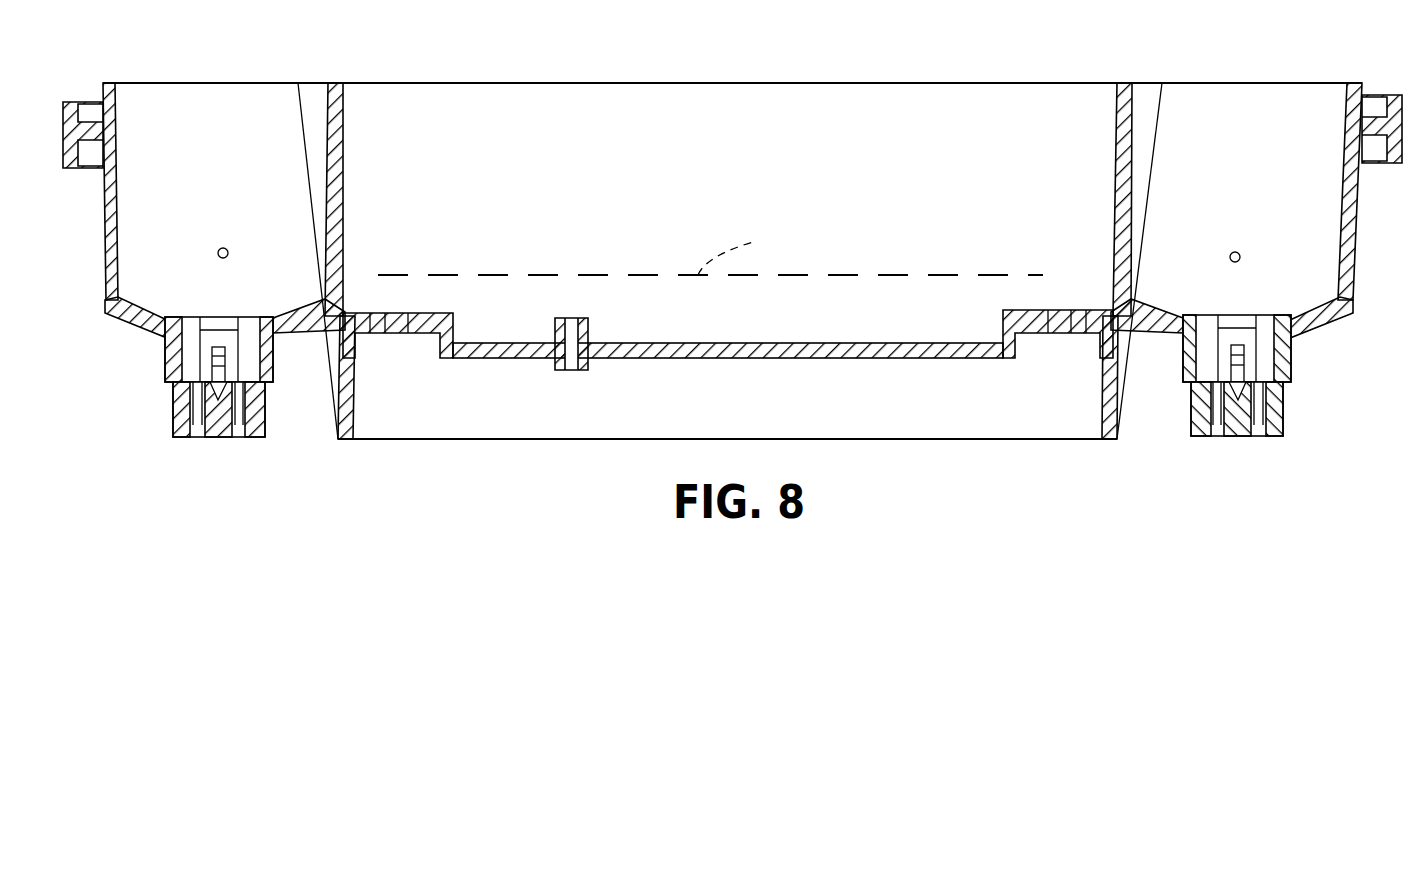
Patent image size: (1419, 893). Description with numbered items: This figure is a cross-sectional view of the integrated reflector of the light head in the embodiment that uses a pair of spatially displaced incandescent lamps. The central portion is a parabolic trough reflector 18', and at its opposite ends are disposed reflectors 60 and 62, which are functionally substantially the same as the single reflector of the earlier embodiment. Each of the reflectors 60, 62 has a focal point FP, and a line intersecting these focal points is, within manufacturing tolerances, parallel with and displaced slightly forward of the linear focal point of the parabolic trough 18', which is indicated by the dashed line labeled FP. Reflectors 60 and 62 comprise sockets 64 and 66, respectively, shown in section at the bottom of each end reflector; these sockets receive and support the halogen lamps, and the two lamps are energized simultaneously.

The parabolic trough reflector 18' is at (728, 261).
The reflector 60 is at (190, 251).
The reflector 62 is at (1215, 233).
The socket 64 is at (207, 316).
The socket 66 is at (1288, 336).